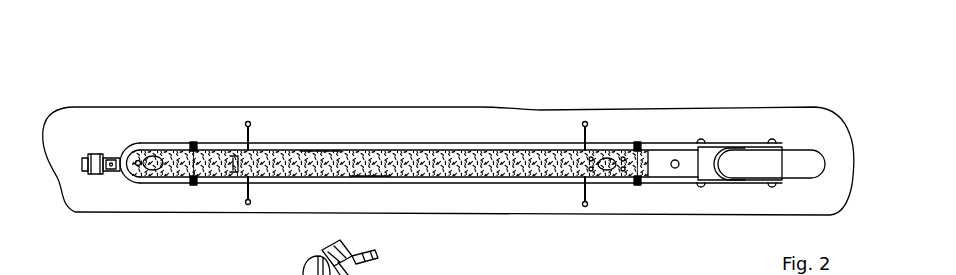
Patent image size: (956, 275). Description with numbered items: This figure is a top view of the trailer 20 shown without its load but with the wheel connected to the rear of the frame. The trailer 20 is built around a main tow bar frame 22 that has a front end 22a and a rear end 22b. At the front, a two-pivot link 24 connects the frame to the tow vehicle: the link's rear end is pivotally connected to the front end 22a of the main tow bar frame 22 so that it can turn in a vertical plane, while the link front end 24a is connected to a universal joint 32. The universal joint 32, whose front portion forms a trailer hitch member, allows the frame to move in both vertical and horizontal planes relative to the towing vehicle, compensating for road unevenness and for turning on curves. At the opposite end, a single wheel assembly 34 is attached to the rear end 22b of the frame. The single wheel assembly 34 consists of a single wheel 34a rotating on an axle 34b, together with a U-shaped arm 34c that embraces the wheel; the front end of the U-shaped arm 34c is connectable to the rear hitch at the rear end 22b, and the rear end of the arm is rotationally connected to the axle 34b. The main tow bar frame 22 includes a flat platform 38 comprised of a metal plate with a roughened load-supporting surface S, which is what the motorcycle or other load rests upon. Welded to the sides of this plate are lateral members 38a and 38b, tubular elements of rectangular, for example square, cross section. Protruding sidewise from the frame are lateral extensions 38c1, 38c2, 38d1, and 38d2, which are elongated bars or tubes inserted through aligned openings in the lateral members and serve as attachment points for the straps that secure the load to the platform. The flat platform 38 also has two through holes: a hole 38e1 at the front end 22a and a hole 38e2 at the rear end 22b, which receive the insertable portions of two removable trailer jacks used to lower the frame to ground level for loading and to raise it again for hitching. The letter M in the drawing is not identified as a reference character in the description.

The trailer 20 is at (417, 78).
The main tow bar frame 22 is at (450, 138).
The front end 22a is at (176, 150).
The rear end 22b is at (630, 147).
The two-pivot link 24 is at (188, 130).
The link front end 24a is at (122, 150).
The universal joint 32 is at (103, 155).
The single wheel assembly 34 is at (740, 128).
The single wheel 34a is at (805, 160).
The axle 34b is at (772, 142).
The U-shaped arm 34c is at (743, 187).
The flat platform 38 is at (502, 157).
The lateral member 38a is at (318, 147).
The lateral member 38b is at (370, 180).
The lateral extension 38c1 is at (248, 122).
The lateral extension 38c2 is at (248, 198).
The lateral extension 38d1 is at (583, 123).
The lateral extension 38d2 is at (583, 206).
The hole 38e1 is at (148, 156).
The hole 38e2 is at (610, 171).
The load-supporting surface S is at (480, 153).
The machine M is at (437, 273).